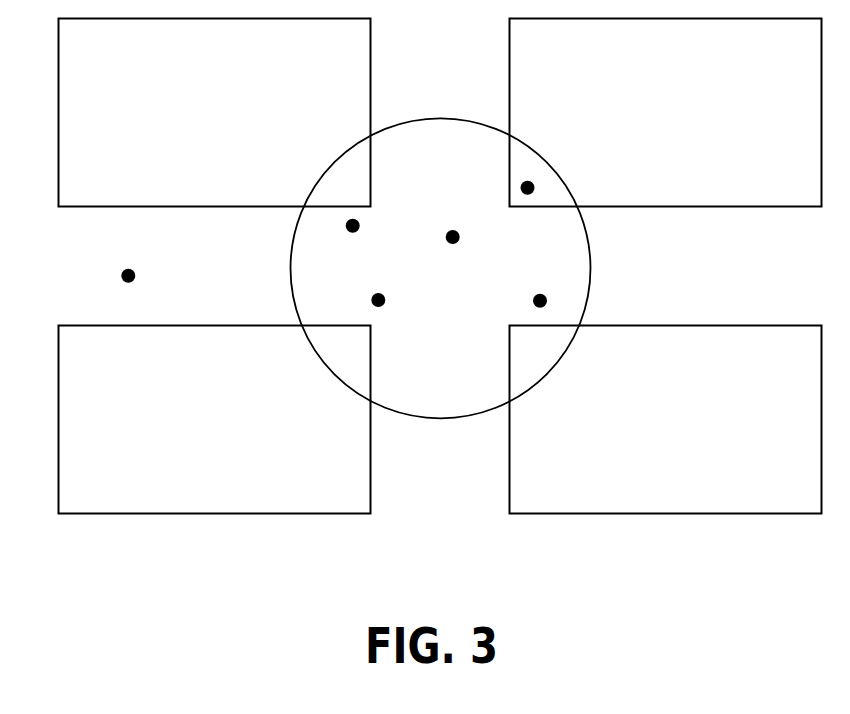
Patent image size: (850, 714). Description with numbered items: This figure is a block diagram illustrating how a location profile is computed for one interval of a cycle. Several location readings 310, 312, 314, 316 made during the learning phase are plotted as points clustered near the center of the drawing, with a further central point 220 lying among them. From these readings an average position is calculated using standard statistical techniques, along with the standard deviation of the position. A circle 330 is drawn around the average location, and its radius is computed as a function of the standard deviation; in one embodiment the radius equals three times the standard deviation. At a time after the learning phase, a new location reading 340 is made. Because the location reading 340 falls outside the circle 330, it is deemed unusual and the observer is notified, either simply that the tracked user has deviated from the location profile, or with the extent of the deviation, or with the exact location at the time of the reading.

The center point of plate 220 is at (446, 221).
The location reading 310 is at (333, 220).
The location reading 312 is at (545, 183).
The third measurement point 314 is at (359, 295).
The location reading 316 is at (546, 297).
The circle 330 is at (459, 419).
The location reading 340 is at (110, 270).